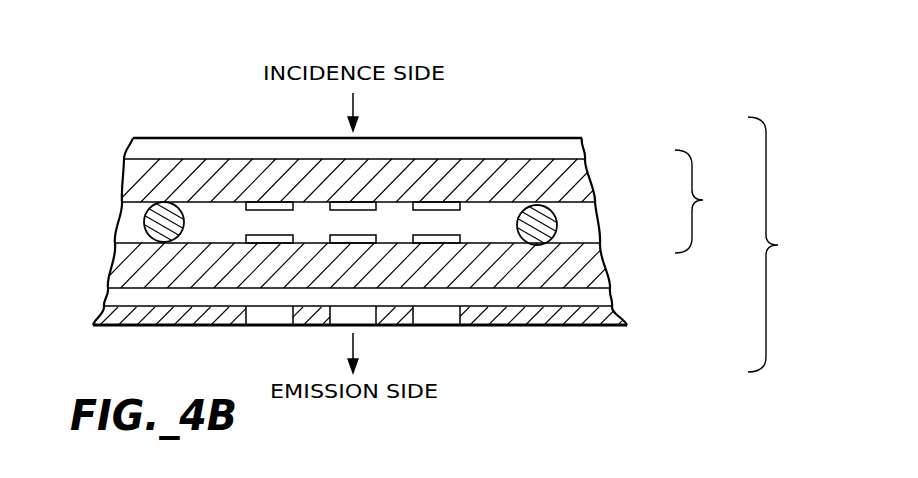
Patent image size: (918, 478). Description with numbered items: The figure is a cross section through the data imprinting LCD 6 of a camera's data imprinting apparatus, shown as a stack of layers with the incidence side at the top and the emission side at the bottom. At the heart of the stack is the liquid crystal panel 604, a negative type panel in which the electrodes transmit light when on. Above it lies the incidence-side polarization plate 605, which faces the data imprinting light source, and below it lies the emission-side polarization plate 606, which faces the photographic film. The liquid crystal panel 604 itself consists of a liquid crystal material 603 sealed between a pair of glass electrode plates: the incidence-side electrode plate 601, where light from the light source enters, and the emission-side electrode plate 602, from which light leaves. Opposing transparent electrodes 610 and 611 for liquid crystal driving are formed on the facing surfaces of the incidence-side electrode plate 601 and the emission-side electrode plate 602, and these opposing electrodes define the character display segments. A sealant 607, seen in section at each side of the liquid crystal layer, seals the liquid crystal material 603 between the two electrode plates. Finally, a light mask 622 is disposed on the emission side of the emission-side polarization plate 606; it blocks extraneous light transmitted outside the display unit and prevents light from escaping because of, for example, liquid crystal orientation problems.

The data imprinting LCD 6 is at (775, 244).
The liquid crystal panel 604 is at (713, 201).
The incidence-side polarization plate 605 is at (583, 151).
The incidence-side electrode plate 601 is at (578, 188).
The liquid crystal material 603 is at (572, 218).
The sealant 607 is at (547, 230).
The emission-side electrode plate 602 is at (568, 267).
The emission-side polarization plate 606 is at (572, 302).
The transparent electrode 610 is at (427, 209).
The transparent electrode 611 is at (430, 241).
The light mask 622 is at (542, 320).